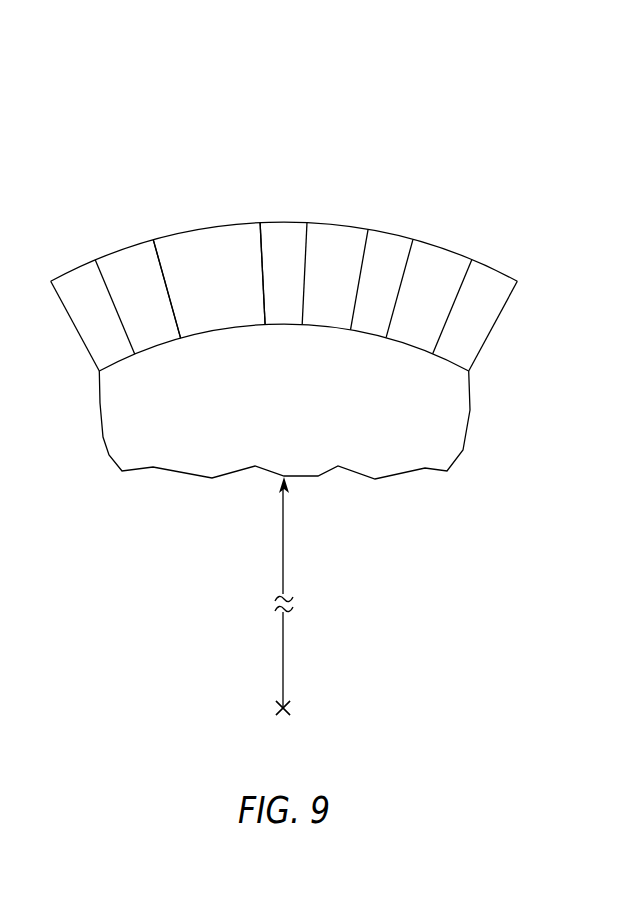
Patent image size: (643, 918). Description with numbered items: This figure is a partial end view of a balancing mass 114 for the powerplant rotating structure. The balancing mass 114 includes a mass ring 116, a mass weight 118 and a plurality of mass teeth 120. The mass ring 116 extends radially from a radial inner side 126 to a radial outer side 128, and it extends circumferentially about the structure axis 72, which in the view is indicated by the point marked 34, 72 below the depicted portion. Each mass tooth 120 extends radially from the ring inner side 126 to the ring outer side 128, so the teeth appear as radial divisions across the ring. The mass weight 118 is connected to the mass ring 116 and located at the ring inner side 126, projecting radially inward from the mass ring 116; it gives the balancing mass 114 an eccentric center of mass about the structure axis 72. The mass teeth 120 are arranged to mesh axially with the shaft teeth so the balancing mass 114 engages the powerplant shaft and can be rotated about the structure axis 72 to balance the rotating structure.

The balancing mass 114 is at (303, 254).
The mass ring 116 is at (463, 245).
The mass weight 118 is at (365, 428).
The mass teeth 120 is at (163, 247).
The radial inner side 126 is at (237, 328).
The radial outer side 128 is at (225, 226).
The rotation axis 34 is at (290, 709).
The structure axis 72 is at (283, 708).